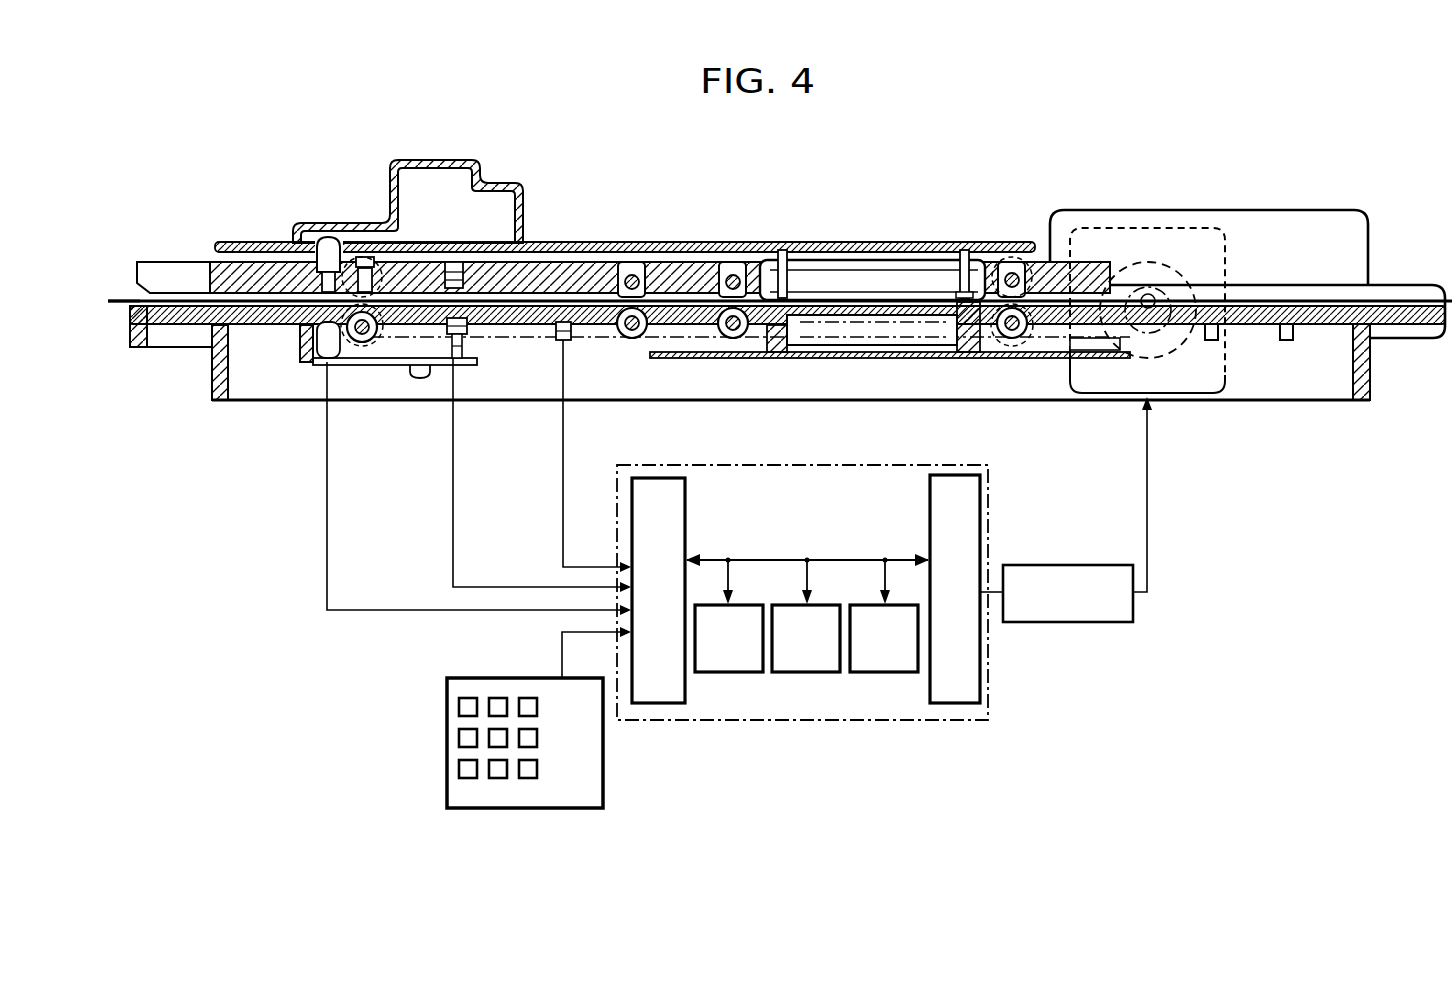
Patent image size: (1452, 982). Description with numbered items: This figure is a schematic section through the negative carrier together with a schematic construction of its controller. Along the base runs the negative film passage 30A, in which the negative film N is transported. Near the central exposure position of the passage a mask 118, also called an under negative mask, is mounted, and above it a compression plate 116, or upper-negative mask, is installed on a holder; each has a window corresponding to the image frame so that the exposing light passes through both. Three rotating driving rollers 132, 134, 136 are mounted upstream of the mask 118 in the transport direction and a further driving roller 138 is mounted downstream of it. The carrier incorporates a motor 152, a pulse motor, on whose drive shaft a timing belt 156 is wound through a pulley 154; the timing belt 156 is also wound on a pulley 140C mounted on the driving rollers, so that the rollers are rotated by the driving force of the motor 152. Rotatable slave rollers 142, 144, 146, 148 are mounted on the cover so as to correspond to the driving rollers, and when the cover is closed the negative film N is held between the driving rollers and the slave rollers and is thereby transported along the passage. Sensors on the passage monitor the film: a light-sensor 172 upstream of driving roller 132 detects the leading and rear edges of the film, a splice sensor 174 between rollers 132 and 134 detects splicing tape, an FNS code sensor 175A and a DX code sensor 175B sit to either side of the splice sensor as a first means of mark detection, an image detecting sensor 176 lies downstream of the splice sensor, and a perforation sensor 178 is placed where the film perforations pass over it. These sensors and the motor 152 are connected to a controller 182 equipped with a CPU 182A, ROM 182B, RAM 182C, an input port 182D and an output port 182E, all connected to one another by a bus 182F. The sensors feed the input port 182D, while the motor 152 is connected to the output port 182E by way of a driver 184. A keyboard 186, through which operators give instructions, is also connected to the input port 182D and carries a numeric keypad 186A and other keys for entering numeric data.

The negative film N is at (122, 304).
The negative film passage 30A is at (519, 312).
The compression plate 116 is at (810, 260).
The mask 118 is at (795, 302).
The driving roller 132 is at (362, 352).
The driving roller 134 is at (625, 355).
The driving roller 136 is at (724, 345).
The driving roller 138 is at (1026, 345).
The pulley 140C is at (375, 345).
The slave roller 142 is at (348, 273).
The slave roller 144 is at (618, 262).
The slave roller 146 is at (735, 262).
The slave roller 148 is at (1000, 262).
The motor 152 is at (1180, 393).
The pulley 154 is at (1163, 300).
The timing belt 156 is at (808, 348).
The light-sensor 172 is at (318, 347).
The splice sensor 174 is at (462, 360).
The FNS code sensor 175A is at (495, 398).
The DX code sensor 175B is at (495, 421).
The image detecting sensor 176 is at (563, 342).
The perforation sensor 178 is at (594, 399).
The controller 182 is at (990, 650).
The CPU 182A is at (800, 673).
The ROM 182B is at (728, 673).
The RAM 182C is at (885, 673).
The input port 182D is at (650, 704).
The output port 182E is at (955, 704).
The bus 182F is at (838, 560).
The driver 184 is at (1060, 623).
The keyboard 186 is at (493, 678).
The numeric keypad 186A is at (460, 791).